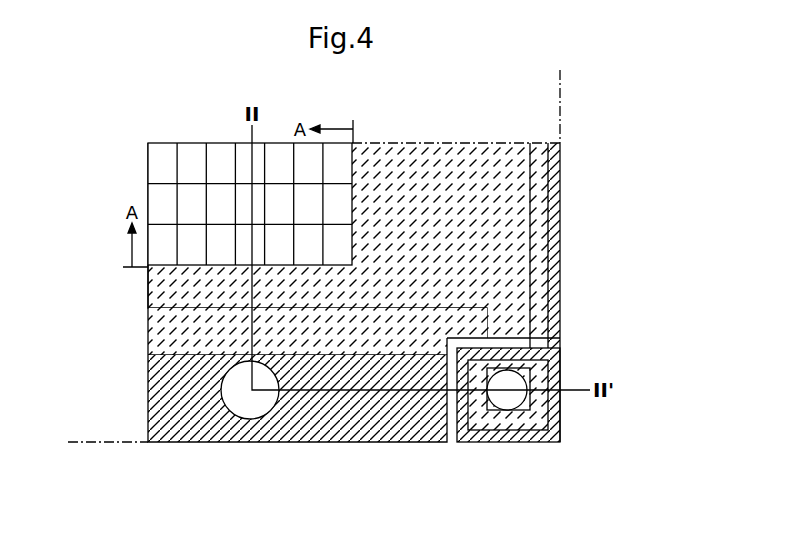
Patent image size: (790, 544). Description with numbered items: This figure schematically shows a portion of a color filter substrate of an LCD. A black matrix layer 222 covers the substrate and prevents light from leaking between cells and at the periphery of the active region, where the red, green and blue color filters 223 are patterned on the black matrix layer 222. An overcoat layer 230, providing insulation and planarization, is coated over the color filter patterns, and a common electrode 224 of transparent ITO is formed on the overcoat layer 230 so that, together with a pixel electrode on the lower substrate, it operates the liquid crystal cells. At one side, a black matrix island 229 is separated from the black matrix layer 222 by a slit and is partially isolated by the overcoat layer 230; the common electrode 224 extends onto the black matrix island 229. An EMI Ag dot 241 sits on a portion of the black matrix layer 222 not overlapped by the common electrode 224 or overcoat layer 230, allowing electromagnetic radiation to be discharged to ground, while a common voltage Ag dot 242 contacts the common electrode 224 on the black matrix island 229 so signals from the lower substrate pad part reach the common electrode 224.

The black matrix layer 222 is at (560, 182).
The color filter layer 223 is at (178, 190).
The common electrode 224 is at (505, 268).
The black matrix island 229 is at (505, 442).
The overcoat layer 230 is at (160, 332).
The EMI Ag dot 241 is at (247, 405).
The common voltage Ag dot 242 is at (520, 374).